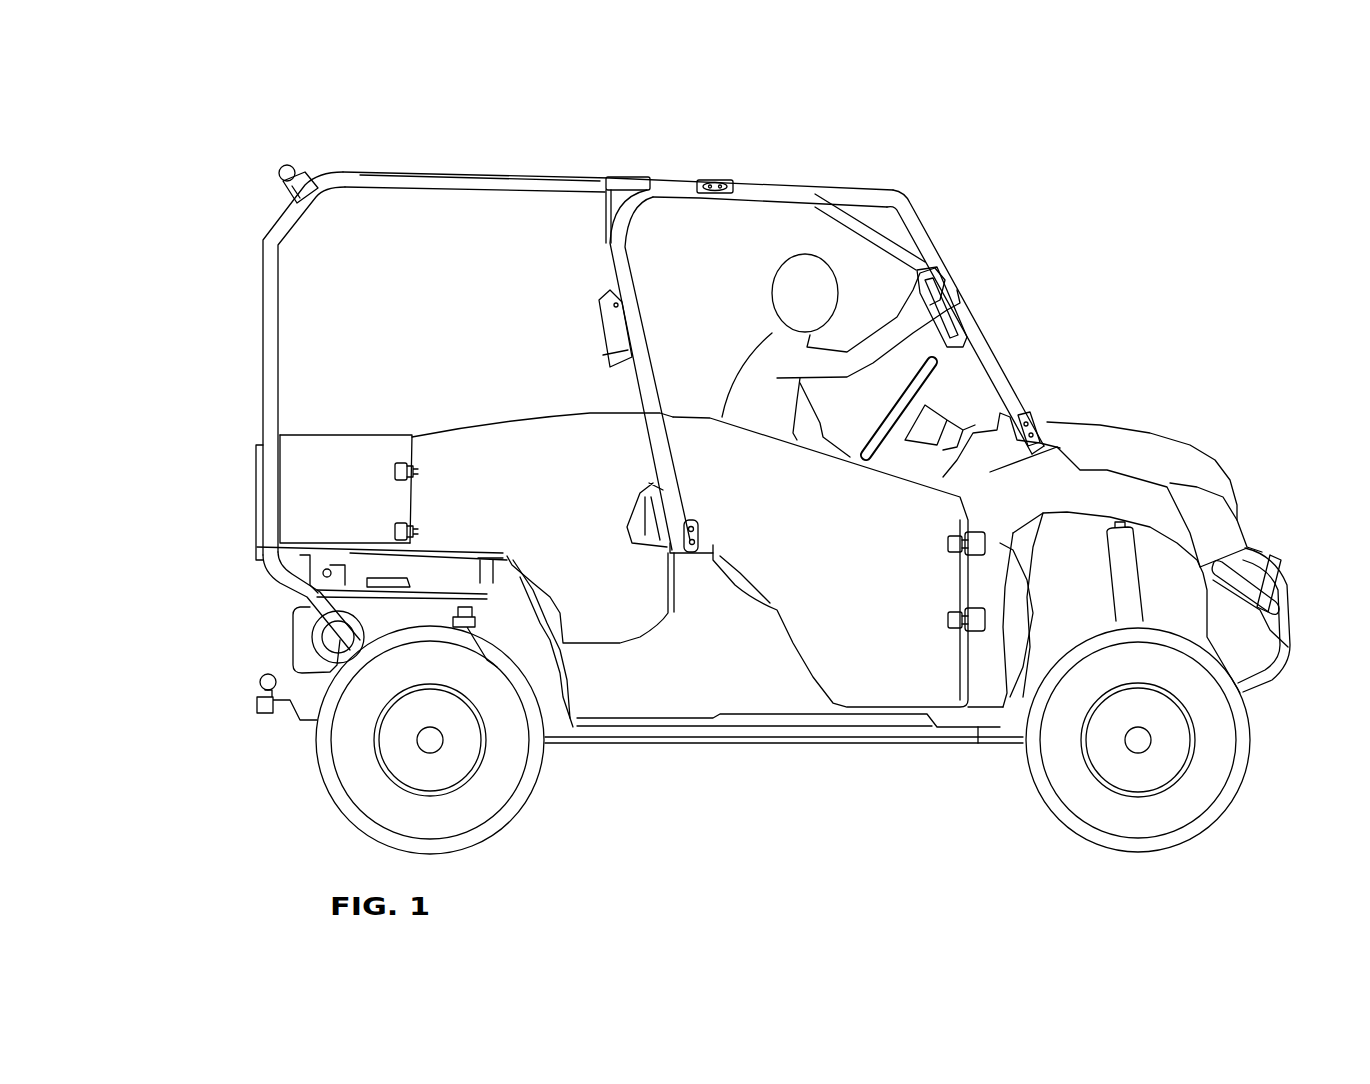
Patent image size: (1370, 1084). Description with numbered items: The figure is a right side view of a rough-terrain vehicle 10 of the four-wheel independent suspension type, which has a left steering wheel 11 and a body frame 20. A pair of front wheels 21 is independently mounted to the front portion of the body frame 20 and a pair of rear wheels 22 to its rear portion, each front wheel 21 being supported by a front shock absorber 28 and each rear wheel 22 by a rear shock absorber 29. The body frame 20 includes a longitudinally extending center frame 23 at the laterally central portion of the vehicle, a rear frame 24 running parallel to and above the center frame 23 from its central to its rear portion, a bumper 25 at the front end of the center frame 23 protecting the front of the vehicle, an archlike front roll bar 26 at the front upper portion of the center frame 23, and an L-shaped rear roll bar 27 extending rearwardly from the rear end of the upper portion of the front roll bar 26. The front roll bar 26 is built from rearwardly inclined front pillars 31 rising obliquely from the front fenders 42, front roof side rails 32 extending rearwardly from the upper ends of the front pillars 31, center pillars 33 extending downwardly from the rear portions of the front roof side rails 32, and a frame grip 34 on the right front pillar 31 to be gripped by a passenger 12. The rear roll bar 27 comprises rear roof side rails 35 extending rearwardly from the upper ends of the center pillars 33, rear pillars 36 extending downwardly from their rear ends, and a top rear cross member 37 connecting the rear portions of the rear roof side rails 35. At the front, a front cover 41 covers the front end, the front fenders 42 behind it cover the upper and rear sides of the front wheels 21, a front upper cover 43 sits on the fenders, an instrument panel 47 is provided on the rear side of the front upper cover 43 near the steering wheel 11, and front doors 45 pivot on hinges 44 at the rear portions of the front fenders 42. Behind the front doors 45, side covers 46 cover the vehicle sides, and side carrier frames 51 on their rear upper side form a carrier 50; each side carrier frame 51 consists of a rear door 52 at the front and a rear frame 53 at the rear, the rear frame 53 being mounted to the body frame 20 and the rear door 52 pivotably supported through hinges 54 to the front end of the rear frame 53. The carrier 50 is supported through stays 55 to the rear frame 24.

The vehicle 10 is at (1102, 205).
The steering wheel 11 is at (945, 360).
The passenger 12 is at (775, 262).
The body frame 20 is at (712, 745).
The front wheels 21 is at (1240, 797).
The rear wheels 22 is at (340, 810).
The center frame 23 is at (978, 745).
The rear frame 24 is at (295, 625).
The bumper 25 is at (1287, 583).
The front roll bar 26 is at (777, 177).
The rear roll bar 27 is at (428, 170).
The front shock absorber 28 is at (1230, 610).
The rear shock absorber 29 is at (467, 622).
The front pillars 31 is at (920, 218).
The front roof side rails 32 is at (842, 187).
The center pillars 33 is at (651, 323).
The frame grip 34 is at (950, 320).
The rear roof side rails 35 is at (532, 177).
The rear pillars 36 is at (262, 390).
The top rear cross member 37 is at (282, 172).
The front cover 41 is at (1150, 525).
The front fenders 42 is at (1083, 480).
The front upper cover 43 is at (1180, 437).
The hinges 44 is at (985, 545).
The front doors 45 is at (867, 697).
The side covers 46 is at (757, 687).
The instrument panel 47 is at (1020, 408).
The carrier 50 is at (335, 395).
The side carrier frames 51 is at (353, 355).
The rear door 52 is at (473, 425).
The rear frame 53 is at (357, 433).
The hinges 54 is at (393, 532).
The stays 55 is at (320, 572).